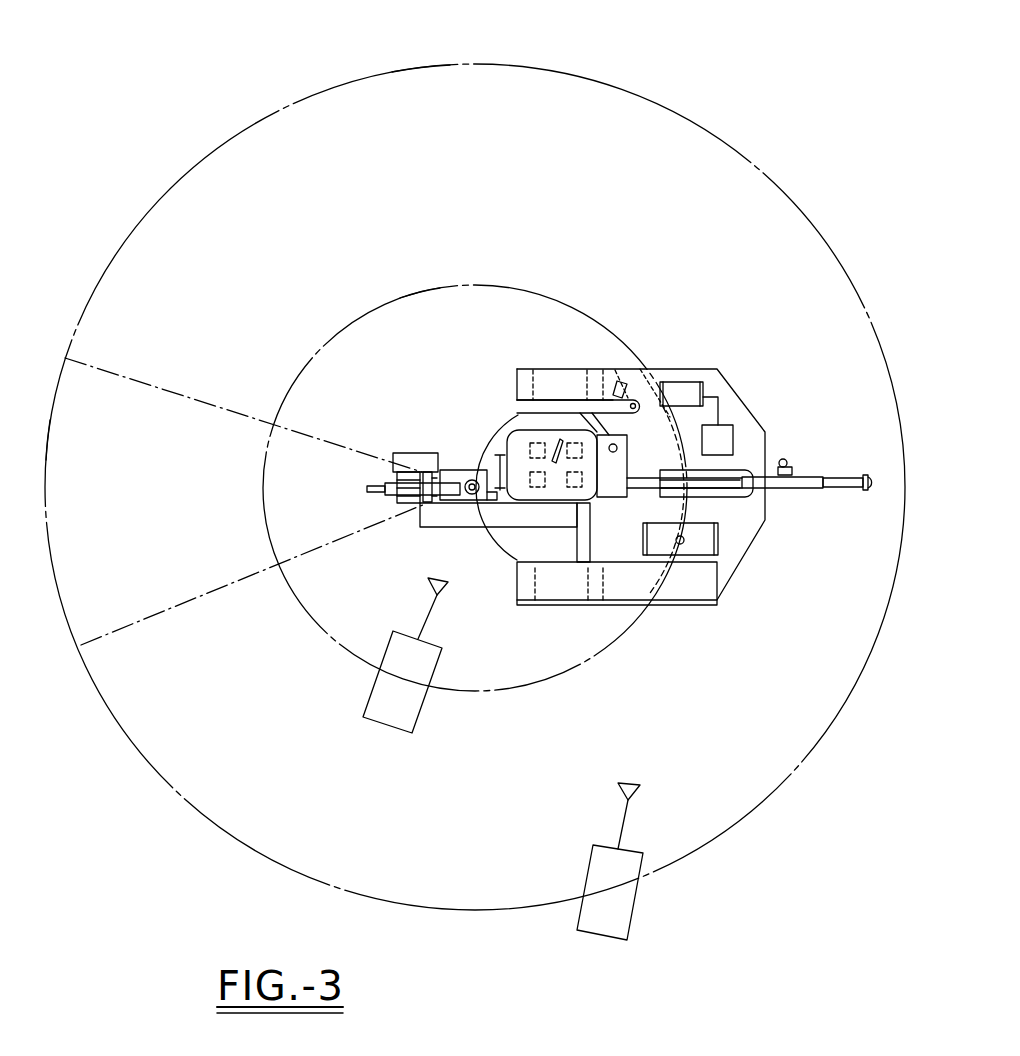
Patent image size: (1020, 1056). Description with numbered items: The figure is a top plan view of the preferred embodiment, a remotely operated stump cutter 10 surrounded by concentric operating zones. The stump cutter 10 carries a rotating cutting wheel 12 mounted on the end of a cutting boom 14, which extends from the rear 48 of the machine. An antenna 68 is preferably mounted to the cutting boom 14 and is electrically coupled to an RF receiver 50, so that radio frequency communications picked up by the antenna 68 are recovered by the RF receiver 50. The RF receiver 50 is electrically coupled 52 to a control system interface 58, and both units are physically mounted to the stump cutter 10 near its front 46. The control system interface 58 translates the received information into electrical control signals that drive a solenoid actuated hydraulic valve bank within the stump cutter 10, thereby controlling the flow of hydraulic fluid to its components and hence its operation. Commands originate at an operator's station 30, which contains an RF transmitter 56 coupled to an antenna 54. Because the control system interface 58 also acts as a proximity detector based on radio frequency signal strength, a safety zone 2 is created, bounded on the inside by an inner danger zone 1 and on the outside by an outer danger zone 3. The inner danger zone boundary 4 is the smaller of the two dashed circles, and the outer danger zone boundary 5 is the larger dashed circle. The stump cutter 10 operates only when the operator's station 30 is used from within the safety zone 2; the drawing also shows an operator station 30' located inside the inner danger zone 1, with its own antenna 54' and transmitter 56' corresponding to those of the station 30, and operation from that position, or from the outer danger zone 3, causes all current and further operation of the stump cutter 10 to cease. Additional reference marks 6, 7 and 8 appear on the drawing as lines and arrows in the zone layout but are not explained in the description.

The inner danger zone 1 is at (427, 317).
The safety zone 2 is at (307, 126).
The outer danger zone 3 is at (132, 156).
The inner danger zone boundary 4 is at (442, 288).
The outer danger zone boundary 5 is at (421, 65).
The sector between reference lines 6 is at (131, 396).
The first reference line 7 is at (176, 393).
The second reference line 8 is at (200, 597).
The stump cutter 10 is at (588, 464).
The cutting wheel 12 is at (383, 488).
The cutting boom 14 is at (447, 503).
The operator's station 30 is at (613, 861).
The operator station 30' is at (430, 657).
The front 46 is at (767, 520).
The rear 48 is at (503, 536).
The RF receiver 50 is at (683, 383).
The electrical coupling 52 is at (720, 403).
The antenna 54 is at (588, 816).
The second antenna 54' is at (400, 607).
The RF transmitter 56 is at (580, 892).
The second station housing 56' is at (433, 682).
The control system interface 58 is at (735, 432).
The antenna 68 is at (469, 481).